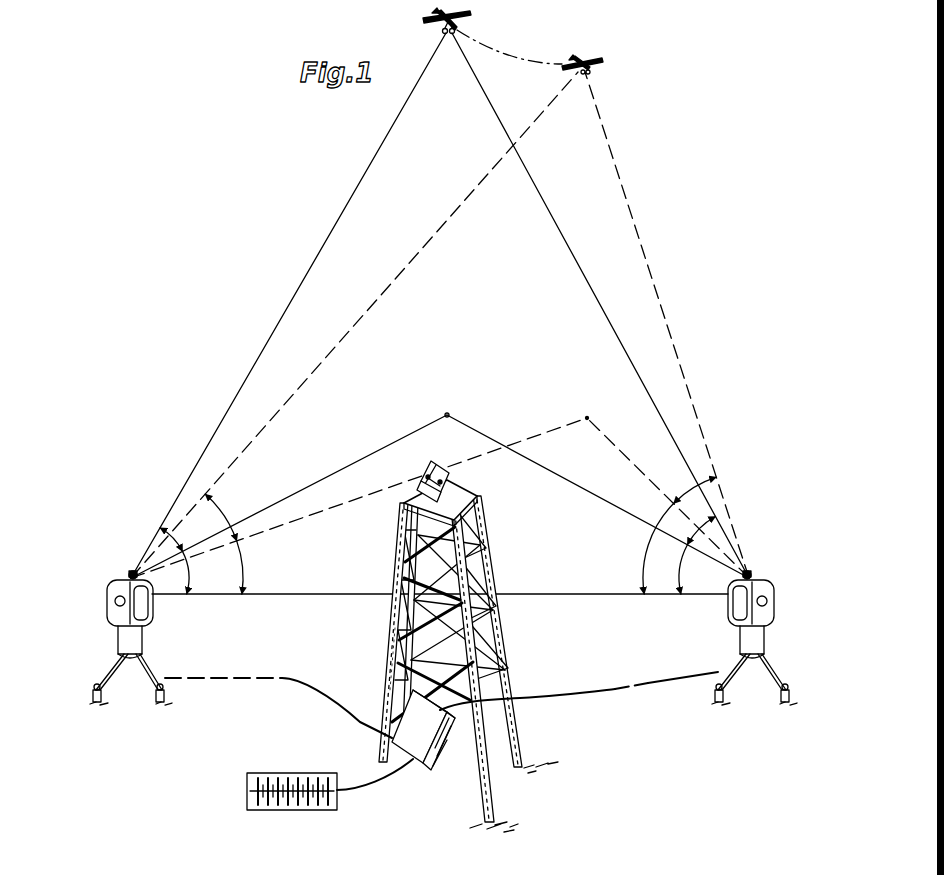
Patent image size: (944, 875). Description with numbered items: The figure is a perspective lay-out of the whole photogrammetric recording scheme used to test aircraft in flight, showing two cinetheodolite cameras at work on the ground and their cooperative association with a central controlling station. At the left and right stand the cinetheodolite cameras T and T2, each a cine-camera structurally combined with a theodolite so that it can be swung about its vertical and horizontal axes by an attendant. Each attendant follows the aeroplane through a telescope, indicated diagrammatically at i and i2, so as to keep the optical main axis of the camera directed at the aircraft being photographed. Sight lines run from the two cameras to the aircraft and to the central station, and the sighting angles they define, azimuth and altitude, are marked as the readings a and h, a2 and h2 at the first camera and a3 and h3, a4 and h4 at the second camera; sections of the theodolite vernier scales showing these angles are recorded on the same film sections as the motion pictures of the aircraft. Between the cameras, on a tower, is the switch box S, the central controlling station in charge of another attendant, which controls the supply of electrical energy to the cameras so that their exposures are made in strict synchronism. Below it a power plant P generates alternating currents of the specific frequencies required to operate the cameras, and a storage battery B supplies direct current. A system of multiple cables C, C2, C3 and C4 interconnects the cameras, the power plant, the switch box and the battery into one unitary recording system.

The cinetheodolite camera T is at (117, 638).
The telescope i is at (110, 604).
The cinetheodolite camera T2 is at (757, 638).
The telescope i2 is at (768, 601).
The switch box S is at (423, 474).
The power plant P is at (437, 747).
The storage battery B is at (311, 810).
The cable C is at (370, 790).
The cable C2 is at (393, 628).
The cable C3 is at (288, 676).
The cable C4 is at (600, 698).
The azimuth sighting angle a is at (173, 540).
The azimuth sighting angle a2 is at (221, 517).
The azimuth sighting angle a3 is at (691, 532).
The azimuth sighting angle a4 is at (691, 490).
The altitude sighting angle h is at (194, 572).
The altitude sighting angle h2 is at (253, 567).
The altitude sighting angle h3 is at (671, 569).
The altitude sighting angle h4 is at (643, 549).